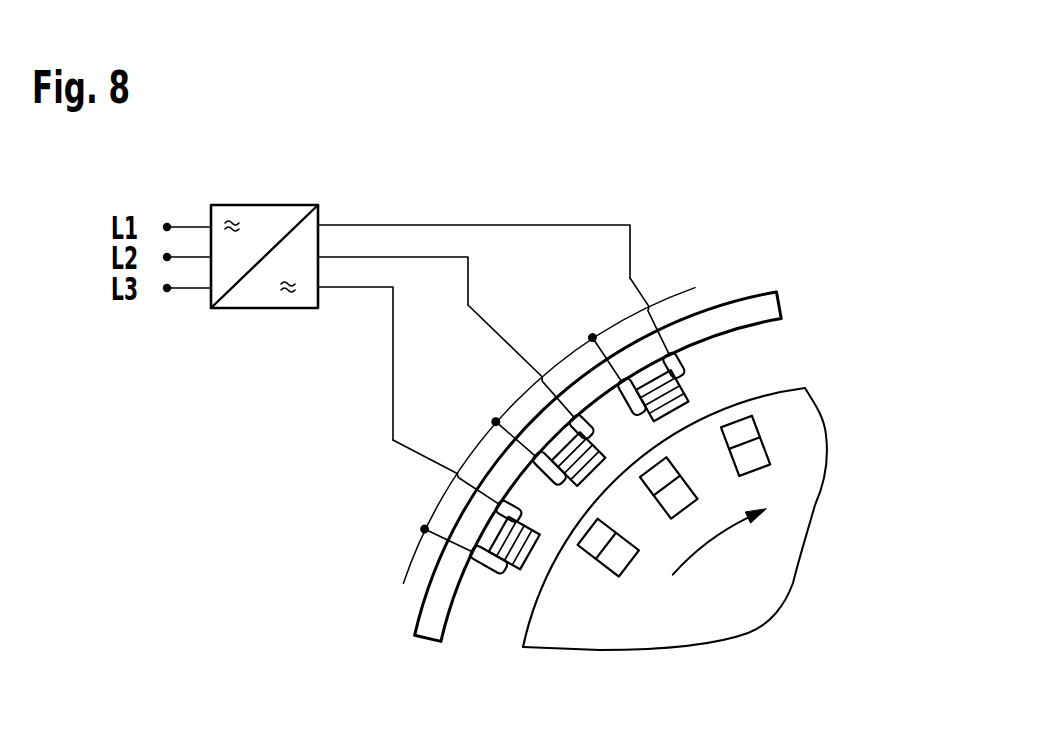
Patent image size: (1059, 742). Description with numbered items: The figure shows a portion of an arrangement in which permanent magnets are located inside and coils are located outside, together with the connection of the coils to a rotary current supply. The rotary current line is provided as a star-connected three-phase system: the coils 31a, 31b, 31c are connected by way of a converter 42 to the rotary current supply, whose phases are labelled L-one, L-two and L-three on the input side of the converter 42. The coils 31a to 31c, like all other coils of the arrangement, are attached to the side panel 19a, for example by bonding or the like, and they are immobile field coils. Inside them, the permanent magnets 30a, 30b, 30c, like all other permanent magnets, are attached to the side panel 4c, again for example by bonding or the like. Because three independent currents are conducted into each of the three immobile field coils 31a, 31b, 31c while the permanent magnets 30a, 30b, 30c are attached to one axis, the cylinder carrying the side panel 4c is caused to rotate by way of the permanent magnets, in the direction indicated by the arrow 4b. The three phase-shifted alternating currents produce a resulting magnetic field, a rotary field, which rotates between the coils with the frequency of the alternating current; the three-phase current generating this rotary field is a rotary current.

The converter 42 is at (273, 215).
The side panel 19a is at (754, 305).
The coil 31a is at (520, 563).
The coil 31b is at (578, 485).
The coil 31c is at (690, 392).
The permanent magnet 30a is at (613, 557).
The permanent magnet 30b is at (677, 497).
The permanent magnet 30c is at (748, 435).
The arrow 4b is at (707, 547).
The side panel 4c is at (780, 572).